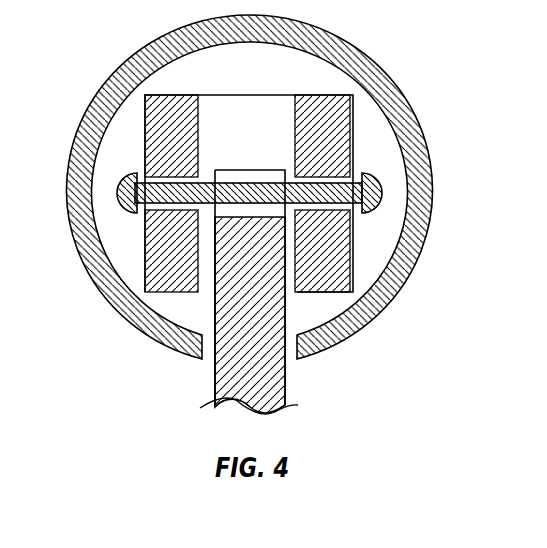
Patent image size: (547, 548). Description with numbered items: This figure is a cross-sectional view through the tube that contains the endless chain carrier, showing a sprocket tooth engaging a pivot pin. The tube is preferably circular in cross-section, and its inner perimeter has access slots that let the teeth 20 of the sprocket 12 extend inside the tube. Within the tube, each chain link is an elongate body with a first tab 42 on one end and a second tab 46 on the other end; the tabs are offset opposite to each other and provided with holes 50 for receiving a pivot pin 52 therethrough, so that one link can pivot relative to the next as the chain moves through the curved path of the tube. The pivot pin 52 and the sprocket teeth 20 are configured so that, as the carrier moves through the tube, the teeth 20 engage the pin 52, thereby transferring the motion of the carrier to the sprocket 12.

The first sprocket 12 is at (285, 383).
The teeth 20 is at (397, 88).
The first tab 42 is at (340, 245).
The second tab 46 is at (170, 253).
The holes 50 is at (170, 183).
The pivot pin 52 is at (383, 193).